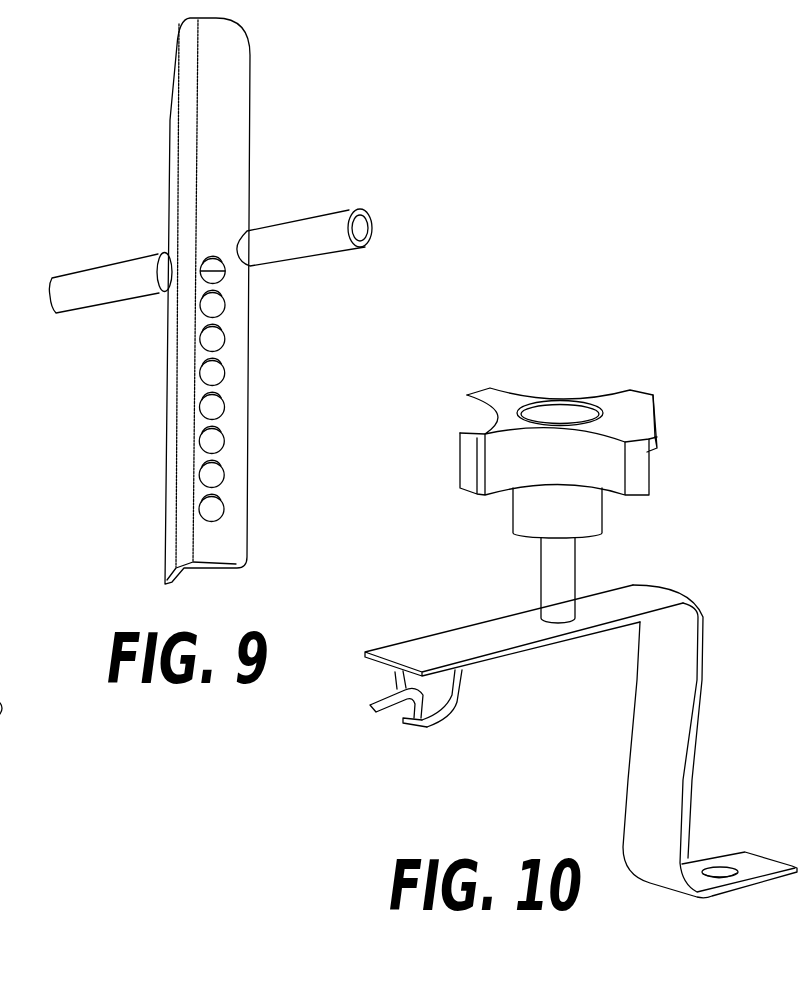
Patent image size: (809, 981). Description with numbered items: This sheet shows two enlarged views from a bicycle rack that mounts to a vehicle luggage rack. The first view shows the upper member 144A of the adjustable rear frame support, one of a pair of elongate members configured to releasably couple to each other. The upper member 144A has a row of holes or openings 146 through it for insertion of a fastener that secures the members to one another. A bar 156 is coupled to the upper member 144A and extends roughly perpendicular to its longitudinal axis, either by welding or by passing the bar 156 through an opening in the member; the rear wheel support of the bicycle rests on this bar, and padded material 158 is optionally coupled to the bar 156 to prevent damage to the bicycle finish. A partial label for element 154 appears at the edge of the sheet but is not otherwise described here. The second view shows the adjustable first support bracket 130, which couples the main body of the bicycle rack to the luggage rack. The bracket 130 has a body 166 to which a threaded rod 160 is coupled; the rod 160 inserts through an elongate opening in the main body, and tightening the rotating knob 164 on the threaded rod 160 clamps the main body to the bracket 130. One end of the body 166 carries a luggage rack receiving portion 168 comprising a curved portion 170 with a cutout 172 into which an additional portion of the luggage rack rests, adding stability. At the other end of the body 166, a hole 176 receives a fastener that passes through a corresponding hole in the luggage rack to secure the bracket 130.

In FIG. 9, the upper member 144A is at (225, 82).
In FIG. 9, the bar 156 is at (316, 225).
In FIG. 9, the padded material 158 is at (320, 243).
In FIG. 9, the holes or openings 146 is at (212, 408).
In FIG. 9, the leg member 154 is at (0, 750).
In FIG. 10, the first support bracket 130 is at (563, 590).
In FIG. 10, the rotating knob 164 is at (643, 420).
In FIG. 10, the threaded rod 160 is at (558, 577).
In FIG. 10, the body 166 is at (581, 741).
In FIG. 10, the hole 176 is at (723, 868).
In FIG. 10, the luggage rack receiving portion 168 is at (441, 740).
In FIG. 10, the curved portion 170 is at (460, 685).
In FIG. 10, the cutout 172 is at (390, 718).